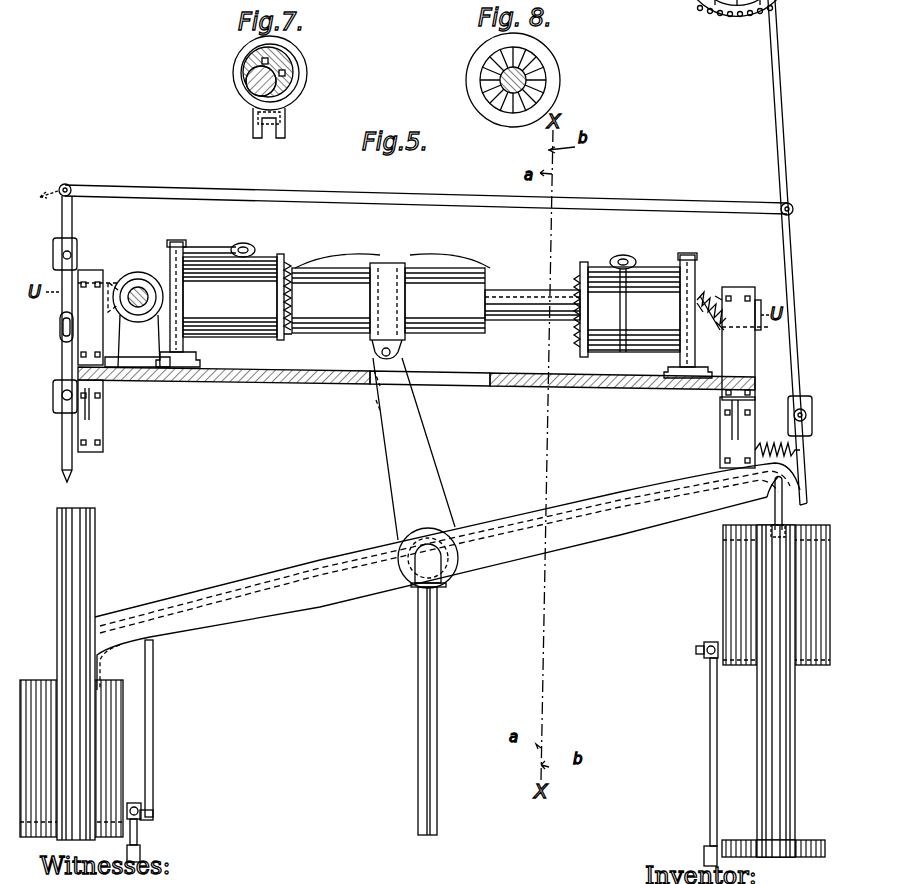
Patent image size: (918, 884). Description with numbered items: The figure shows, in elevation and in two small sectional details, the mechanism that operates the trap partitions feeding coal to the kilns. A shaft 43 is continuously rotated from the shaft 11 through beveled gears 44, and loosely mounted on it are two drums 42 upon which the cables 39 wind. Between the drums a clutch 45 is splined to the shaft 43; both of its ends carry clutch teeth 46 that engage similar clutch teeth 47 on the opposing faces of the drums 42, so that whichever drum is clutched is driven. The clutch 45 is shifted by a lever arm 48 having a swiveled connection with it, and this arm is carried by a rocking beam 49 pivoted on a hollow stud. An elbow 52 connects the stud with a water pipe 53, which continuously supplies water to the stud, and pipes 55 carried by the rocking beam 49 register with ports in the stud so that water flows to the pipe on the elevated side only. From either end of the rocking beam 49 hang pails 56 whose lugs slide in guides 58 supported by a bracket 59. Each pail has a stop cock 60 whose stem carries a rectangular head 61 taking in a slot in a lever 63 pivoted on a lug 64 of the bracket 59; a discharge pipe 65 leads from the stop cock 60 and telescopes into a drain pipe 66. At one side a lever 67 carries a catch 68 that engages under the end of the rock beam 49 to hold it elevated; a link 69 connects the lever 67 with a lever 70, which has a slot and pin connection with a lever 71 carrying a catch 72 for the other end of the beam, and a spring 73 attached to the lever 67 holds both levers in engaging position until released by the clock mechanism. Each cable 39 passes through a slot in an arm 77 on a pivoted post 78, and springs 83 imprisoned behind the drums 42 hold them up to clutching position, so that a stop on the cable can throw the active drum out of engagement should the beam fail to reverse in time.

In FIG. 5, the shaft 11 is at (138, 310).
In FIG. 5, the cables 39 is at (246, 243).
In FIG. 8, the drums 42 is at (556, 85).
In FIG. 5, the drums 42 is at (431, 305).
In FIG. 7, the shaft 43 is at (285, 64).
In FIG. 8, the shaft 43 is at (522, 73).
In FIG. 5, the shaft 43 is at (542, 322).
In FIG. 5, the beveled gears 44 is at (142, 272).
In FIG. 7, the clutch 45 is at (275, 90).
In FIG. 5, the clutch 45 is at (388, 300).
In FIG. 5, the clutch teeth 46 is at (392, 255).
In FIG. 8, the clutch teeth 47 is at (496, 66).
In FIG. 5, the clutch teeth 47 is at (296, 267).
In FIG. 5, the lever arm 48 is at (412, 480).
In FIG. 5, the rocking beam 49 is at (228, 584).
In FIG. 5, the elbow 52 is at (433, 570).
In FIG. 5, the water pipe 53 is at (437, 700).
In FIG. 5, the pipes 55 is at (283, 622).
In FIG. 5, the pails 56 is at (97, 742).
In FIG. 5, the guides 58 is at (88, 545).
In FIG. 5, the bracket 59 is at (737, 840).
In FIG. 5, the stop cock 60 is at (134, 803).
In FIG. 5, the rectangular head 61 is at (150, 812).
In FIG. 5, the lever 63 is at (153, 690).
In FIG. 5, the lug 64 is at (120, 615).
In FIG. 5, the discharge pipe 65 is at (137, 828).
In FIG. 5, the drain pipe 66 is at (140, 852).
In FIG. 5, the lever 67 is at (803, 345).
In FIG. 5, the catch 68 is at (790, 492).
In FIG. 5, the link 69 is at (605, 205).
In FIG. 5, the lever 70 is at (72, 222).
In FIG. 5, the lever 71 is at (78, 360).
In FIG. 5, the catch 72 is at (72, 478).
In FIG. 5, the spring 73 is at (770, 440).
In FIG. 5, the arm 77 is at (196, 244).
In FIG. 5, the pivoted post 78 is at (180, 340).
In FIG. 5, the springs 83 is at (712, 290).